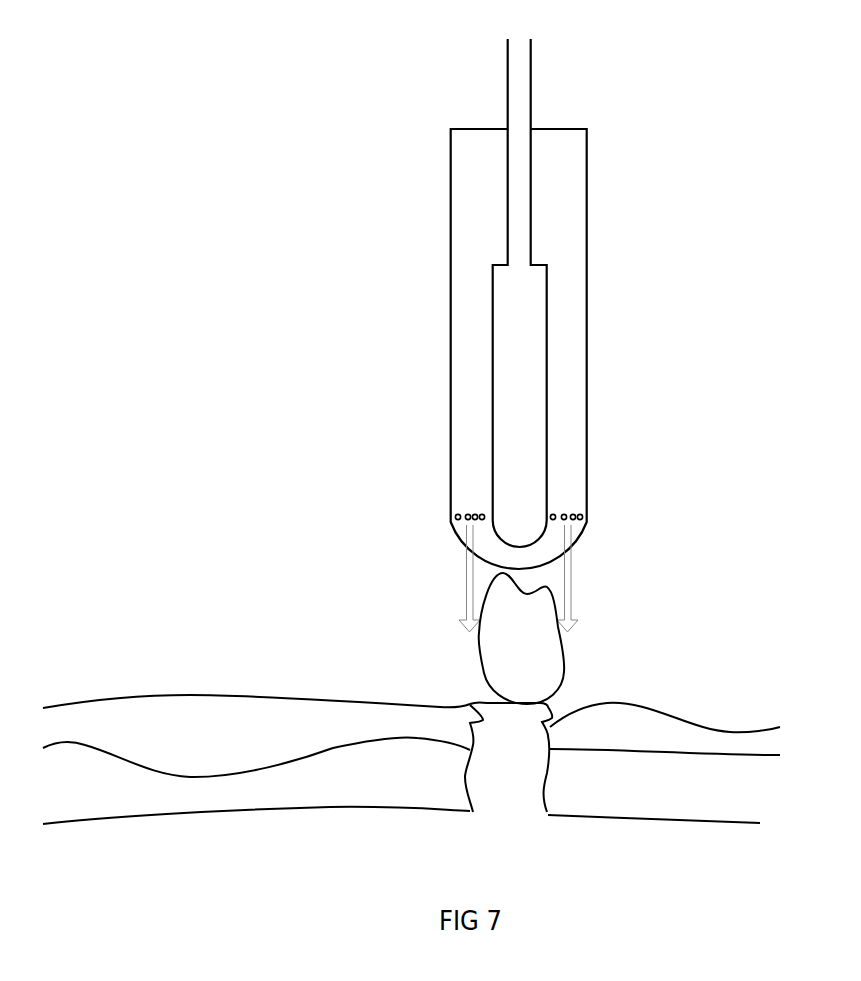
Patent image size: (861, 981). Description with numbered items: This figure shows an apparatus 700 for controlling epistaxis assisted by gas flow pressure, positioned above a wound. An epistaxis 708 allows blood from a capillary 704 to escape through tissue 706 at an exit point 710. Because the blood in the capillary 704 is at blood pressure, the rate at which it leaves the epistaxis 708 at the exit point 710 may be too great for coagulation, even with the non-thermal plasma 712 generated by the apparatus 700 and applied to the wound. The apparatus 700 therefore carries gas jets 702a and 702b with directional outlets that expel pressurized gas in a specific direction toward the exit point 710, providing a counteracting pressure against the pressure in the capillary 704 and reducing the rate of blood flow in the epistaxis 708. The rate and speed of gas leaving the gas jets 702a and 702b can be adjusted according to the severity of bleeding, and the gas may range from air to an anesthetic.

The apparatus 700 is at (587, 465).
The gas jet 702a is at (457, 516).
The gas jet 702b is at (578, 515).
The capillary 704 is at (333, 748).
The tissue 706 is at (143, 697).
The epistaxis 708 is at (547, 706).
The exit point 710 is at (481, 690).
The non-thermal plasma 712 is at (558, 655).